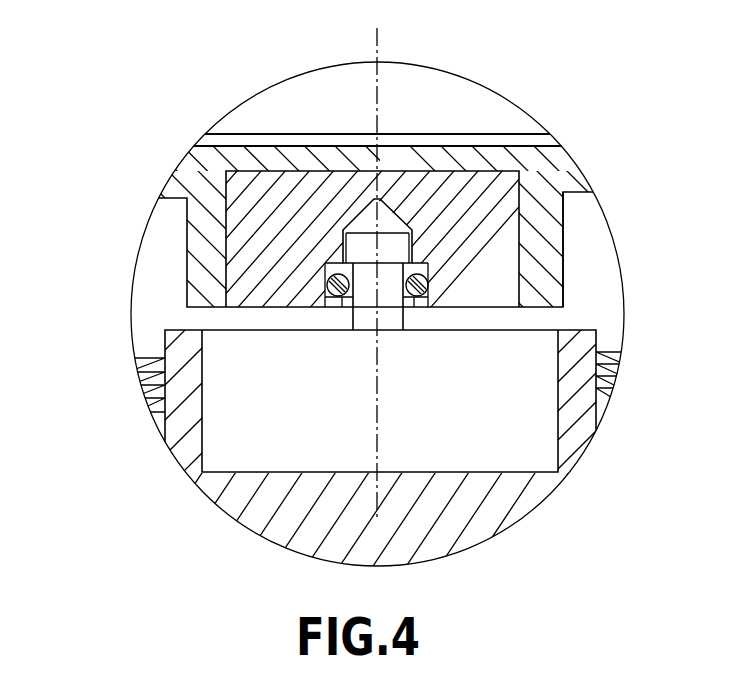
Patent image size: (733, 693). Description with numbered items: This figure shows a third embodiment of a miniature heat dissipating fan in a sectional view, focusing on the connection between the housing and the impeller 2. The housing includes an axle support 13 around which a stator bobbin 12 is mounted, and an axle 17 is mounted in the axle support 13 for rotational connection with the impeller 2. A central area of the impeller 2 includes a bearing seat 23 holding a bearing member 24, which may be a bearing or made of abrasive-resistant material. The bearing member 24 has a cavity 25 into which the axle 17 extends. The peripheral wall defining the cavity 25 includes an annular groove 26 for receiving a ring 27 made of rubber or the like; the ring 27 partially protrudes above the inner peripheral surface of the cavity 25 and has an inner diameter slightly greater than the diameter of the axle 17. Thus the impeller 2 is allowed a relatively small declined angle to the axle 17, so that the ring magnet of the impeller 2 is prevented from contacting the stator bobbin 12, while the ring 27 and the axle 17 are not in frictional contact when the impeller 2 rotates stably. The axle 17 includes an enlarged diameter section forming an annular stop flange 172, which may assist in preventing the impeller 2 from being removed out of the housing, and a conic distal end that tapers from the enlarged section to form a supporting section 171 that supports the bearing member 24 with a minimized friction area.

The impeller 2 is at (495, 150).
The stator bobbin 12 is at (612, 380).
The axle support 13 is at (582, 415).
The axle 17 is at (364, 307).
The supporting section 171 is at (375, 198).
The annular stop flange 172 is at (332, 267).
The bearing seat 23 is at (553, 242).
The bearing member 24 is at (258, 192).
The cavity 25 is at (430, 238).
The annular groove 26 is at (338, 285).
The ring 27 is at (425, 305).